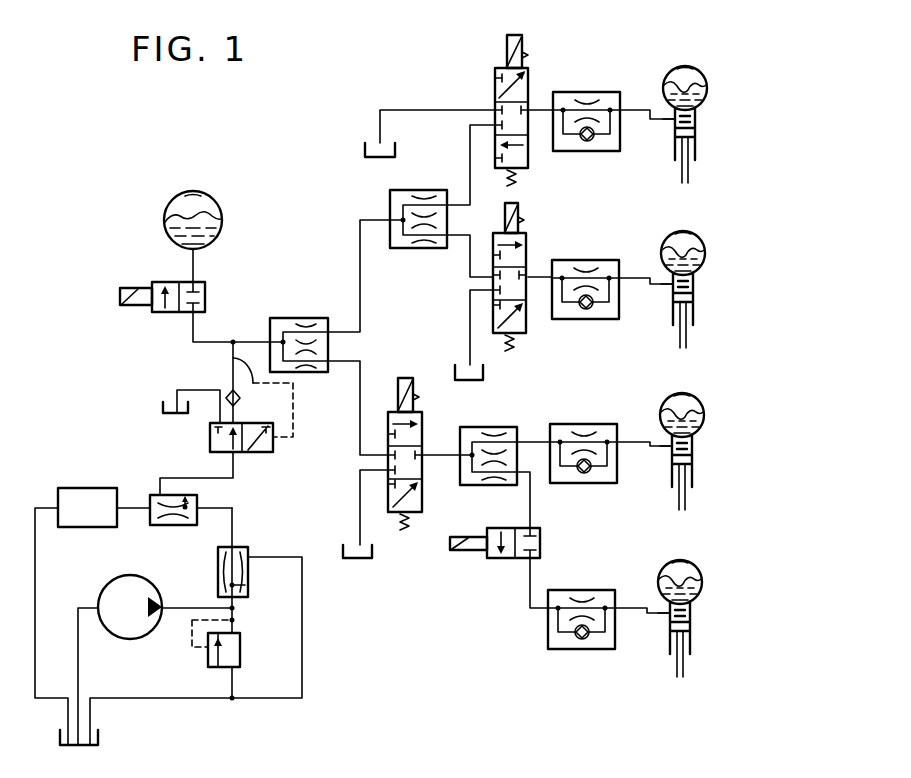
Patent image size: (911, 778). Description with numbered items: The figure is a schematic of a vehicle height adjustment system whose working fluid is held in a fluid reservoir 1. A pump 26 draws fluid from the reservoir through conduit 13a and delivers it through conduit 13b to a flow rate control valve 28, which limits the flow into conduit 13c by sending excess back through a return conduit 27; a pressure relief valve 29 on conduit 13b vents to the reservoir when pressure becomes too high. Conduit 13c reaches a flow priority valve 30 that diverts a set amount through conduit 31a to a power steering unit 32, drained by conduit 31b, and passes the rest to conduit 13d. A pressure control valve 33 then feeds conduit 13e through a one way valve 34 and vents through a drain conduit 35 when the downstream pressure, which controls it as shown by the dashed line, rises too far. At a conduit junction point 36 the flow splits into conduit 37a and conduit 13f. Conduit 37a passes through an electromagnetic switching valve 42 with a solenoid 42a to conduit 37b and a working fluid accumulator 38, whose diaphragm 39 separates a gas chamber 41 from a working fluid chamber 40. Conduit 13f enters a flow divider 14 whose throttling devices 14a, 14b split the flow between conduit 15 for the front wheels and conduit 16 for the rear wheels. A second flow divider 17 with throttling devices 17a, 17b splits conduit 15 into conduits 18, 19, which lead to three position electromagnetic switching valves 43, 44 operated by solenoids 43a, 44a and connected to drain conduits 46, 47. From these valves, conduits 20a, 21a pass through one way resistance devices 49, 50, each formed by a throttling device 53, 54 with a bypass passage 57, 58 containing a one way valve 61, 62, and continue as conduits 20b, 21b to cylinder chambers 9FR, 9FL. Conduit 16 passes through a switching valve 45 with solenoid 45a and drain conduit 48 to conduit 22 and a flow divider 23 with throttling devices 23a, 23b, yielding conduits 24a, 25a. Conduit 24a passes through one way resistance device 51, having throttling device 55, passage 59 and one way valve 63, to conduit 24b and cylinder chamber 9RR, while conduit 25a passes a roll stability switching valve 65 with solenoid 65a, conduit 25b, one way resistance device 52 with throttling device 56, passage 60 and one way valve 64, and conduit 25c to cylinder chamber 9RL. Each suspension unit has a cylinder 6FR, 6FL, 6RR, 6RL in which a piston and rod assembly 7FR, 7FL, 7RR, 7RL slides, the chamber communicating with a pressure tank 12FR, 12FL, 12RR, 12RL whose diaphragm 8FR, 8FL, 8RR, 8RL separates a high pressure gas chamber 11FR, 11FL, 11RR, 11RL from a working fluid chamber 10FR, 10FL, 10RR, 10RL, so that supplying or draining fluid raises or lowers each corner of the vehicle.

The fluid reservoir 1 is at (364, 152).
The cylinder 6FR is at (650, 135).
The cylinder 6FL is at (648, 300).
The cylinder 6RR is at (647, 462).
The cylinder 6RL is at (645, 629).
The piston and rod assembly 7FR is at (711, 161).
The piston and rod assembly 7FL is at (708, 326).
The piston and rod assembly 7RR is at (710, 488).
The piston and rod assembly 7RL is at (706, 655).
The diaphragm 8FR is at (701, 74).
The diaphragm 8FL is at (698, 239).
The diaphragm 8RR is at (699, 401).
The diaphragm 8RL is at (696, 568).
The cylinder chamber 9FR is at (710, 134).
The cylinder chamber 9FL is at (707, 299).
The cylinder chamber 9RR is at (709, 461).
The cylinder chamber 9RL is at (705, 628).
The working fluid chamber 10FR is at (669, 64).
The working fluid chamber 10FL is at (667, 229).
The working fluid chamber 10RR is at (666, 391).
The working fluid chamber 10RL is at (664, 558).
The gas chamber 11FR is at (696, 42).
The gas chamber 11FL is at (693, 207).
The gas chamber 11RR is at (694, 369).
The gas chamber 11RL is at (691, 536).
The pressure tank 12FR is at (719, 81).
The pressure tank 12FL is at (716, 246).
The pressure tank 12RR is at (717, 408).
The pressure tank 12RL is at (714, 575).
The conduit 13a is at (80, 662).
The conduit 13b is at (200, 606).
The conduit 13c is at (235, 519).
The conduit 13d is at (181, 477).
The conduit 13e is at (263, 397).
The conduit 13f is at (256, 341).
The flow divider 14 is at (284, 318).
The throttling device 14a is at (310, 318).
The throttling device 14b is at (311, 372).
The conduit 15 is at (361, 242).
The conduit 16 is at (361, 417).
The flow divider 17 is at (389, 202).
The throttling device 17a is at (424, 196).
The throttling device 17b is at (421, 242).
The conduit 18 is at (470, 136).
The conduit 19 is at (469, 258).
The conduit 20a is at (549, 110).
The conduit 20b is at (643, 110).
The conduit 21a is at (549, 277).
The conduit 21b is at (643, 278).
The conduit 22 is at (442, 452).
The flow divider 23 is at (473, 427).
The throttling device 23a is at (500, 434).
The throttling device 23b is at (492, 484).
The conduit 24a is at (553, 441).
The conduit 24b is at (641, 441).
The conduit 25a is at (531, 514).
The conduit 25b is at (528, 600).
The conduit 25c is at (640, 607).
The pump 26 is at (113, 580).
The return conduit 27 is at (302, 643).
The flow rate control valve 28 is at (218, 570).
The pressure relief valve 29 is at (208, 663).
The flow priority valve 30 is at (157, 495).
The conduit 31a is at (132, 510).
The conduit 31b is at (36, 604).
The power steering unit 32 is at (78, 488).
The pressure control valve 33 is at (254, 453).
The one way valve 34 is at (228, 391).
The drain conduit 35 is at (178, 389).
The conduit junction point 36 is at (239, 332).
The conduit 37a is at (192, 334).
The conduit 37b is at (194, 267).
The working fluid accumulator 38 is at (216, 200).
The diaphragm 39 is at (178, 213).
The working fluid chamber 40 is at (212, 232).
The gas chamber 41 is at (194, 202).
The electromagnetic switching valve 42 is at (165, 282).
The solenoid 42a is at (130, 288).
The electromagnetic switching valve 43 is at (512, 99).
The solenoid 43a is at (540, 40).
The electromagnetic switching valve 44 is at (533, 275).
The solenoid 44a is at (539, 211).
The electromagnetic switching valve 45 is at (421, 438).
The solenoid 45a is at (408, 379).
The drain conduit 46 is at (403, 110).
The drain conduit 47 is at (470, 319).
The drain conduit 48 is at (358, 513).
The one way resistance device 49 is at (591, 114).
The one way resistance device 50 is at (590, 284).
The one way resistance device 51 is at (590, 444).
The one way resistance device 52 is at (587, 617).
The throttling device 53 is at (594, 90).
The throttling device 54 is at (593, 258).
The throttling device 55 is at (592, 420).
The throttling device 56 is at (598, 585).
The passage 57 is at (596, 147).
The passage 58 is at (595, 314).
The passage 59 is at (595, 478).
The passage 60 is at (591, 646).
The one way valve 61 is at (577, 155).
The one way valve 62 is at (578, 324).
The one way valve 63 is at (577, 486).
The one way valve 64 is at (569, 654).
The electromagnetic switching valve 65 is at (500, 559).
The solenoid 65a is at (462, 550).